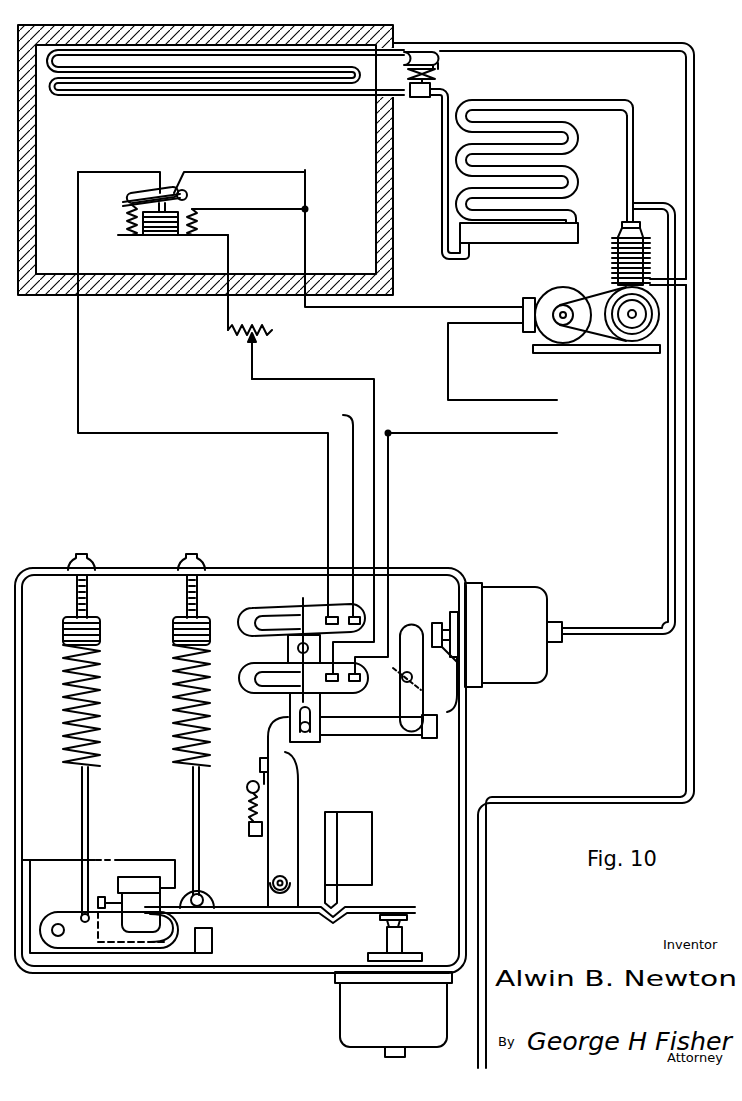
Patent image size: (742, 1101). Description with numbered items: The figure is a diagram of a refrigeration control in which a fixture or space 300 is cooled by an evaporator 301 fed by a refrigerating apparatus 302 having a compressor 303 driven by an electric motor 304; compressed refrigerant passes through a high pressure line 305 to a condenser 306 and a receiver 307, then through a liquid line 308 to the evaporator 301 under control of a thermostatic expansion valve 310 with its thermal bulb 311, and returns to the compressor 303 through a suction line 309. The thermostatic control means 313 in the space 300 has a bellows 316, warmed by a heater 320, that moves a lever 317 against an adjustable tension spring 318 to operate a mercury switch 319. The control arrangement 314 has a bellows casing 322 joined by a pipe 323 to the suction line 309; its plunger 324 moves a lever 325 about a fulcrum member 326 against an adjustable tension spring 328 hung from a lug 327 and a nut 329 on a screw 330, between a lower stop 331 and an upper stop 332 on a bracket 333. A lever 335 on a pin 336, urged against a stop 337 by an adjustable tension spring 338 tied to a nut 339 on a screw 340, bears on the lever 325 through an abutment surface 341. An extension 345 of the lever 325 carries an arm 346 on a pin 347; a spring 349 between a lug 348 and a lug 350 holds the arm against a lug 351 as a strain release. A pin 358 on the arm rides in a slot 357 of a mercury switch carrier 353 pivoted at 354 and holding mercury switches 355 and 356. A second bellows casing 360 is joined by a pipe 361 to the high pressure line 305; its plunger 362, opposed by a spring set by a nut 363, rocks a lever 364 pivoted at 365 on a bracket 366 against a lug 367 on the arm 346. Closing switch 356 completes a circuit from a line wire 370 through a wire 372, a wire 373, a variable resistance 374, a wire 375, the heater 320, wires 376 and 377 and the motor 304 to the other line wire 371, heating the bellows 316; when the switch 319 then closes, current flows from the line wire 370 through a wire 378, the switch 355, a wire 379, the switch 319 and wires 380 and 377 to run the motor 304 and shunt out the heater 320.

The fixture or space 300 is at (30, 135).
The evaporator 301 is at (187, 96).
The refrigerating apparatus 302 is at (608, 362).
The compressor 303 is at (612, 265).
The electric motor 304 is at (555, 290).
The high pressure line 305 is at (634, 157).
The condenser 306 is at (570, 175).
The receiver 307 is at (500, 240).
The liquid line 308 is at (441, 180).
The suction line 309 is at (588, 46).
The thermostatic expansion valve 310 is at (437, 80).
The thermal bulb 311 is at (411, 52).
The thermostatic control means 313 is at (218, 160).
The control arrangement 314 is at (134, 527).
The bellows 316 is at (160, 238).
The lever 317 is at (123, 204).
The adjustable tension spring 318 is at (127, 223).
The mercury switch 319 is at (139, 188).
The heater 320 is at (197, 223).
The bellows casing 322 is at (343, 1010).
The pipe 323 is at (556, 798).
The plunger 324 is at (402, 935).
The lever 325 is at (295, 916).
The fulcrum member 326 is at (372, 852).
The lug 327 is at (205, 894).
The adjustable tension spring 328 is at (173, 736).
The nut 329 is at (173, 625).
The screw 330 is at (187, 596).
The lower stop 331 is at (212, 930).
The upper stop 332 is at (160, 887).
The bracket 333 is at (60, 867).
The lever 335 is at (92, 945).
The pin 336 is at (62, 921).
The stop 337 is at (105, 902).
The adjustable tension spring 338 is at (63, 736).
The nut 339 is at (63, 625).
The screw 340 is at (88, 596).
The abutment surface 341 is at (172, 921).
The extension 345 is at (298, 793).
The arm 346 is at (290, 753).
The pin 347 is at (285, 878).
The lug 348 is at (251, 781).
The spring 349 is at (249, 807).
The lug 350 is at (249, 830).
The lug 351 is at (262, 758).
The mercury switch carrier 353 is at (320, 703).
The pivot 354 is at (288, 648).
The mercury switch 355 is at (268, 610).
The mercury switch 356 is at (252, 668).
The slot 357 is at (318, 742).
The pin 358 is at (298, 723).
The bellows casing 360 is at (510, 590).
The pipe 361 is at (667, 553).
The plunger 362 is at (434, 622).
The nut 363 is at (452, 612).
The lever 364 is at (416, 632).
The pivot 365 is at (402, 683).
The bracket 366 is at (458, 712).
The lug 367 is at (438, 728).
The line wire 370 is at (506, 434).
The line wire 371 is at (505, 400).
The wire 372 is at (389, 500).
The wire 373 is at (375, 399).
The variable resistance 374 is at (236, 336).
The wire 375 is at (230, 252).
The wire 376 is at (258, 211).
The wire 377 is at (306, 245).
The wire 378 is at (343, 415).
The wire 379 is at (225, 433).
The wire 380 is at (288, 170).